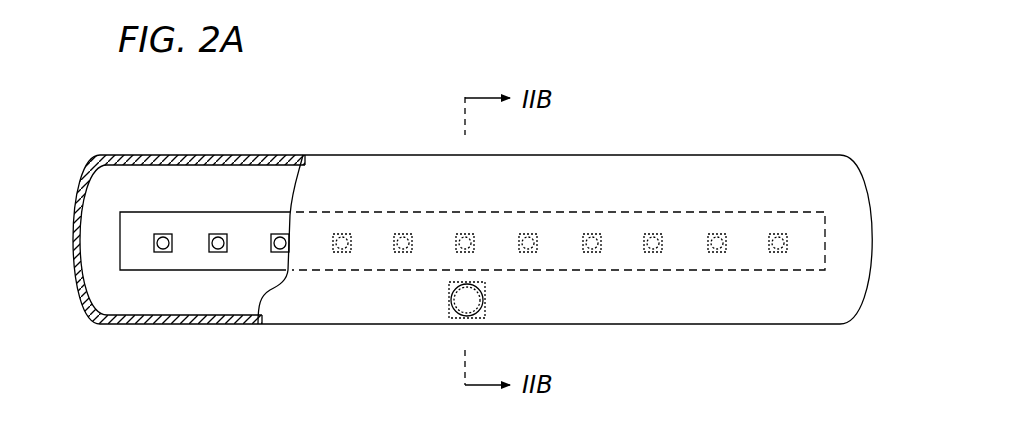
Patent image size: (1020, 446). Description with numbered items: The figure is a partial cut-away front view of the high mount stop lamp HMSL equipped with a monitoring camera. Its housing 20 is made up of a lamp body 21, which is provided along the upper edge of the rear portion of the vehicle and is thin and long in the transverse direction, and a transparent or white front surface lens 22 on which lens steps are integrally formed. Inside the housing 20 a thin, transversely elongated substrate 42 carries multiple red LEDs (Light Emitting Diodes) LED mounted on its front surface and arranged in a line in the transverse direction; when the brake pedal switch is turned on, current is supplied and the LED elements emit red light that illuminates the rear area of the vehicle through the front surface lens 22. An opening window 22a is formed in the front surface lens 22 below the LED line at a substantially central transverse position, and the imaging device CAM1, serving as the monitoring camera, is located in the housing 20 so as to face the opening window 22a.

The housing 20 is at (602, 155).
The lamp body 21 is at (167, 155).
The front surface lens 22 is at (262, 320).
The opening window 22a is at (483, 303).
The circuit board 42 is at (120, 250).
The light emitting diodes LED is at (218, 250).
The imaging device CAM1 is at (450, 312).
The high mount stop lamp HMSL is at (740, 136).